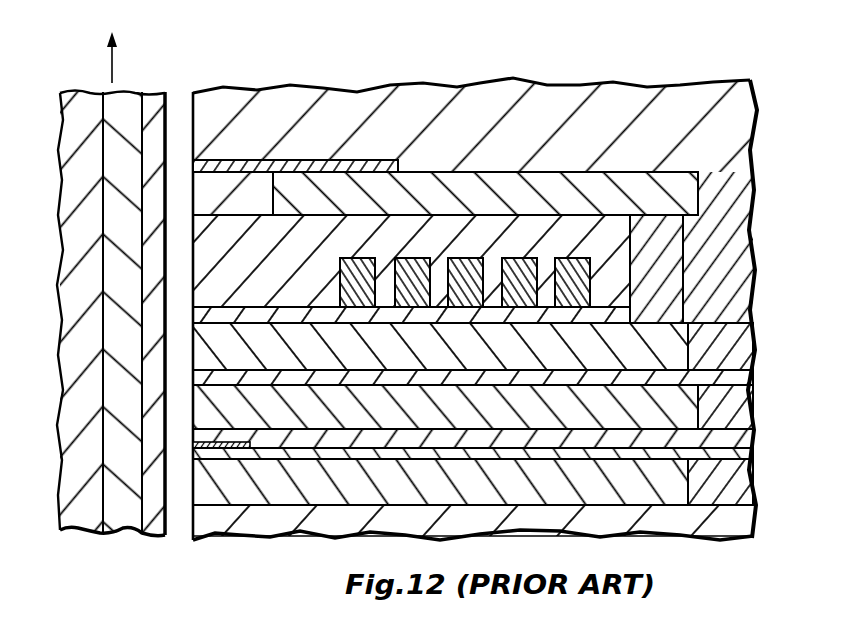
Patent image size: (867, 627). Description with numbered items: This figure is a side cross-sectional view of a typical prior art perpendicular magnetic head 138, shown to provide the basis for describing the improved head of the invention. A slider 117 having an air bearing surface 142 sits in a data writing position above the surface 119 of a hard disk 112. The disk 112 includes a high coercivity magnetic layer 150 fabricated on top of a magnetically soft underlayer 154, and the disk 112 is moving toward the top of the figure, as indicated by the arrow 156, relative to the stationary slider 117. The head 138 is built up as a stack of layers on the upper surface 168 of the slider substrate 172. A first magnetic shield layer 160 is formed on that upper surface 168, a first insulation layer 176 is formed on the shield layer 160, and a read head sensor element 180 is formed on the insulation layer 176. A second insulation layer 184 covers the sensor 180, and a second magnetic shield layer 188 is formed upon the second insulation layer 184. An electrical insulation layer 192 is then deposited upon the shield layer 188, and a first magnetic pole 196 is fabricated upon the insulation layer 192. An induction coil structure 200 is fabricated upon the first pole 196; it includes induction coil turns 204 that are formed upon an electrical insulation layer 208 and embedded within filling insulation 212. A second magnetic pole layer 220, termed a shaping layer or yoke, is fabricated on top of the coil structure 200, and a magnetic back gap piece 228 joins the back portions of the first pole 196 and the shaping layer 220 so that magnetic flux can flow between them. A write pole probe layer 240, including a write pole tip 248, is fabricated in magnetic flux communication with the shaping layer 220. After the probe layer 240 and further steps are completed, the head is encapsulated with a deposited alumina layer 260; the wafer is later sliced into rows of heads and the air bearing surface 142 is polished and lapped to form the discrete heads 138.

The hard disk 112 is at (75, 104).
The slider 117 is at (323, 538).
The surface of the hard disk 119 is at (176, 512).
The perpendicular magnetic head 138 is at (336, 76).
The air bearing surface 142 is at (193, 95).
The high coercivity magnetic layer 150 is at (147, 543).
The magnetically soft underlayer 154 is at (122, 516).
The arrow 156 is at (111, 66).
The first magnetic shield layer 160 is at (678, 483).
The upper surface of the slider substrate 168 is at (740, 511).
The slider substrate 172 is at (690, 522).
The first insulation layer 176 is at (733, 455).
The read head sensor element 180 is at (224, 442).
The second insulation layer 184 is at (733, 435).
The second magnetic shield layer 188 is at (682, 409).
The electrical insulation layer 192 is at (733, 376).
The first magnetic pole 196 is at (677, 351).
The induction coil structure 200 is at (612, 270).
The induction coil turns 204 is at (488, 258).
The electrical insulation layer 208 is at (683, 308).
The filling insulation 212 is at (298, 265).
The second magnetic pole layer 220 is at (683, 195).
The magnetic back gap piece 228 is at (668, 274).
The write pole probe layer 240 is at (287, 167).
The write pole tip 248 is at (214, 160).
The alumina layer 260 is at (550, 141).